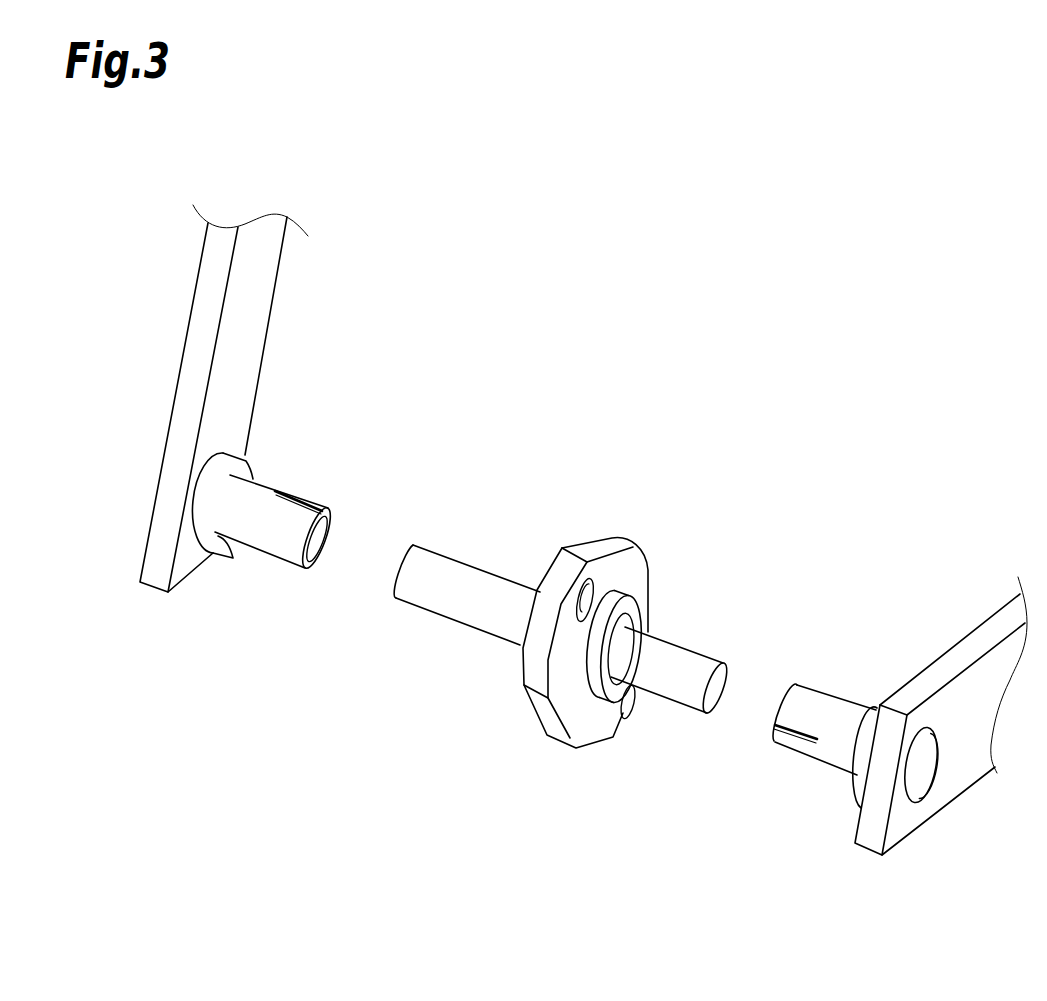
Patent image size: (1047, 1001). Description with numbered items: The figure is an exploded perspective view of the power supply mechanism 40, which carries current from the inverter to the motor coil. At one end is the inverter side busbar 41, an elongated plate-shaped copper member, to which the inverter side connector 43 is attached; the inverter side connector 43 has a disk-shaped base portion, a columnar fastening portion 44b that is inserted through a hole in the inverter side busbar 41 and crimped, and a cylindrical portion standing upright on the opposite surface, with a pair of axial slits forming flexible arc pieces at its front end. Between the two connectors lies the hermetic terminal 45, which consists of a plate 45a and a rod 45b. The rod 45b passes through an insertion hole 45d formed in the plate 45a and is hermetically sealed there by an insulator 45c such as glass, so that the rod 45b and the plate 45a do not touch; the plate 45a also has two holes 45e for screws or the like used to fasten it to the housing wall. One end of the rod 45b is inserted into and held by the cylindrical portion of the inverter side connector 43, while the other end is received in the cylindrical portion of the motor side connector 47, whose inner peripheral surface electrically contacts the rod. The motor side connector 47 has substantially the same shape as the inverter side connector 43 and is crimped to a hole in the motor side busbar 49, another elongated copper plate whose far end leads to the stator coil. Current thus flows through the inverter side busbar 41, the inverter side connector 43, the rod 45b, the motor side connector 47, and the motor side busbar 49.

The power supply mechanism 40 is at (873, 256).
The inverter side busbar 41 is at (948, 662).
The inverter side connector 43 is at (835, 684).
The fastening portion 44b is at (930, 778).
The hermetic terminal 45 is at (667, 506).
The plate 45a is at (650, 564).
The rod 45b is at (479, 573).
The insulator 45c is at (608, 705).
The insertion hole 45d is at (618, 597).
The holes 45e is at (580, 602).
The motor side connector 47 is at (243, 556).
The motor side busbar 49 is at (206, 333).